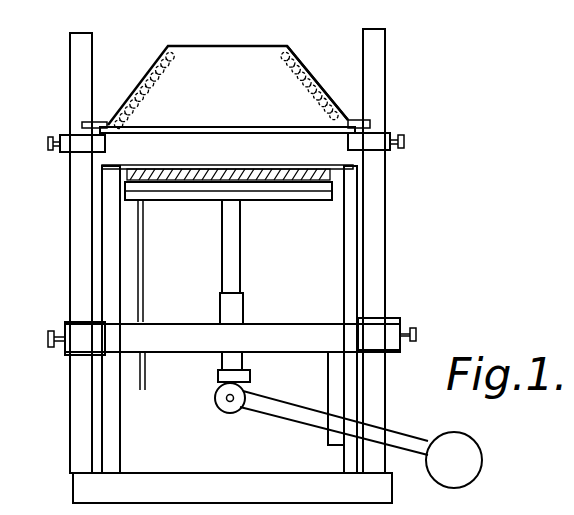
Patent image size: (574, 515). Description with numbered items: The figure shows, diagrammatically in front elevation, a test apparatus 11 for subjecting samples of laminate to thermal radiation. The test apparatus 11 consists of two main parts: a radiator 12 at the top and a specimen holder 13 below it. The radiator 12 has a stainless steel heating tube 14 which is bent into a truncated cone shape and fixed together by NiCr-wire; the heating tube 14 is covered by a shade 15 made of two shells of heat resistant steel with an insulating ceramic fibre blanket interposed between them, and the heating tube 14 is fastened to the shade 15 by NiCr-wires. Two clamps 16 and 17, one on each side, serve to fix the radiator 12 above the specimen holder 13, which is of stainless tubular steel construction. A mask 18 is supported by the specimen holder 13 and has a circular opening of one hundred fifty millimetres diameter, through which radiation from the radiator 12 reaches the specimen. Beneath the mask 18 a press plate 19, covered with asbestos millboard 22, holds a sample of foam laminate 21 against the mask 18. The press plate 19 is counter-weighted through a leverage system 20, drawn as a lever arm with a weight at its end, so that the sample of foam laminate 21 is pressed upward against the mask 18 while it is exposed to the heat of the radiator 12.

The test apparatus 11 is at (182, 42).
The radiator 12 is at (205, 86).
The specimen holder 13 is at (86, 218).
The heating tube 14 is at (322, 84).
The shade 15 is at (300, 67).
The clamp 16 is at (48, 144).
The clamp 17 is at (404, 141).
The mask 18 is at (353, 166).
The press plate 19 is at (290, 201).
The leverage system 20 is at (218, 405).
The sample of foam laminate 21 is at (328, 173).
The asbestos millboard 22 is at (126, 186).